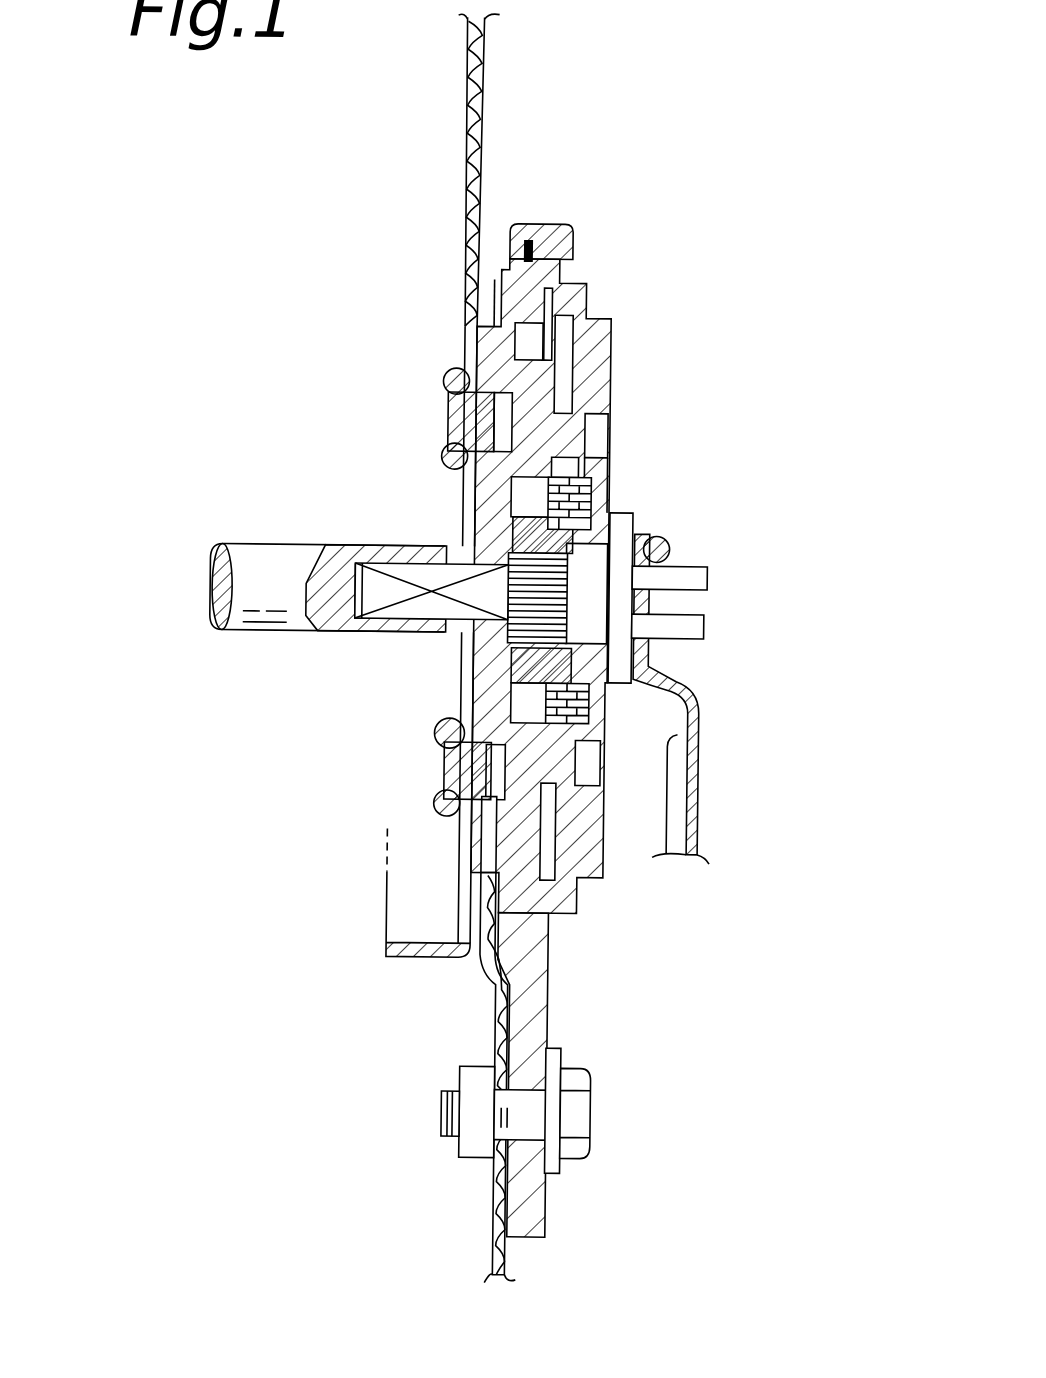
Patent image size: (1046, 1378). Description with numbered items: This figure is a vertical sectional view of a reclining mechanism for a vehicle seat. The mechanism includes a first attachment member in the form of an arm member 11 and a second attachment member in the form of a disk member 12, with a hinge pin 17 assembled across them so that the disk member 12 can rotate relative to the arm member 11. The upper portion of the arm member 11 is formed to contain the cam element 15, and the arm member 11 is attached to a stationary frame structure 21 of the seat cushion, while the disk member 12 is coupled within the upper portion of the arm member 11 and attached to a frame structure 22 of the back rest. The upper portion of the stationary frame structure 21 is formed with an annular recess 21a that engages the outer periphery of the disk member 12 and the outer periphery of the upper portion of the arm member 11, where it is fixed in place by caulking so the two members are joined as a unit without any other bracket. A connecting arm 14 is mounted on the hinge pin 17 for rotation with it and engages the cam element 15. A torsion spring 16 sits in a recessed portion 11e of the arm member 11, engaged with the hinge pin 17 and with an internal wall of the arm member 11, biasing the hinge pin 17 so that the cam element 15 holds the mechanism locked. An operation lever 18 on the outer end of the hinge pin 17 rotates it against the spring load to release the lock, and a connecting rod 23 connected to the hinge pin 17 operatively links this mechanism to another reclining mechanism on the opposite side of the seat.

The arm member 11 is at (611, 337).
The recessed portion 11e is at (604, 488).
The disk member 12 is at (440, 413).
The connecting arm 14 is at (511, 526).
The cam element 15 is at (466, 850).
The torsion spring 16 is at (586, 706).
The hinge pin 17 is at (411, 626).
The operation lever 18 is at (703, 762).
The stationary frame structure 21 is at (502, 1030).
The annular recess 21a is at (557, 230).
The frame structure 22 is at (462, 112).
The connecting rod 23 is at (296, 560).